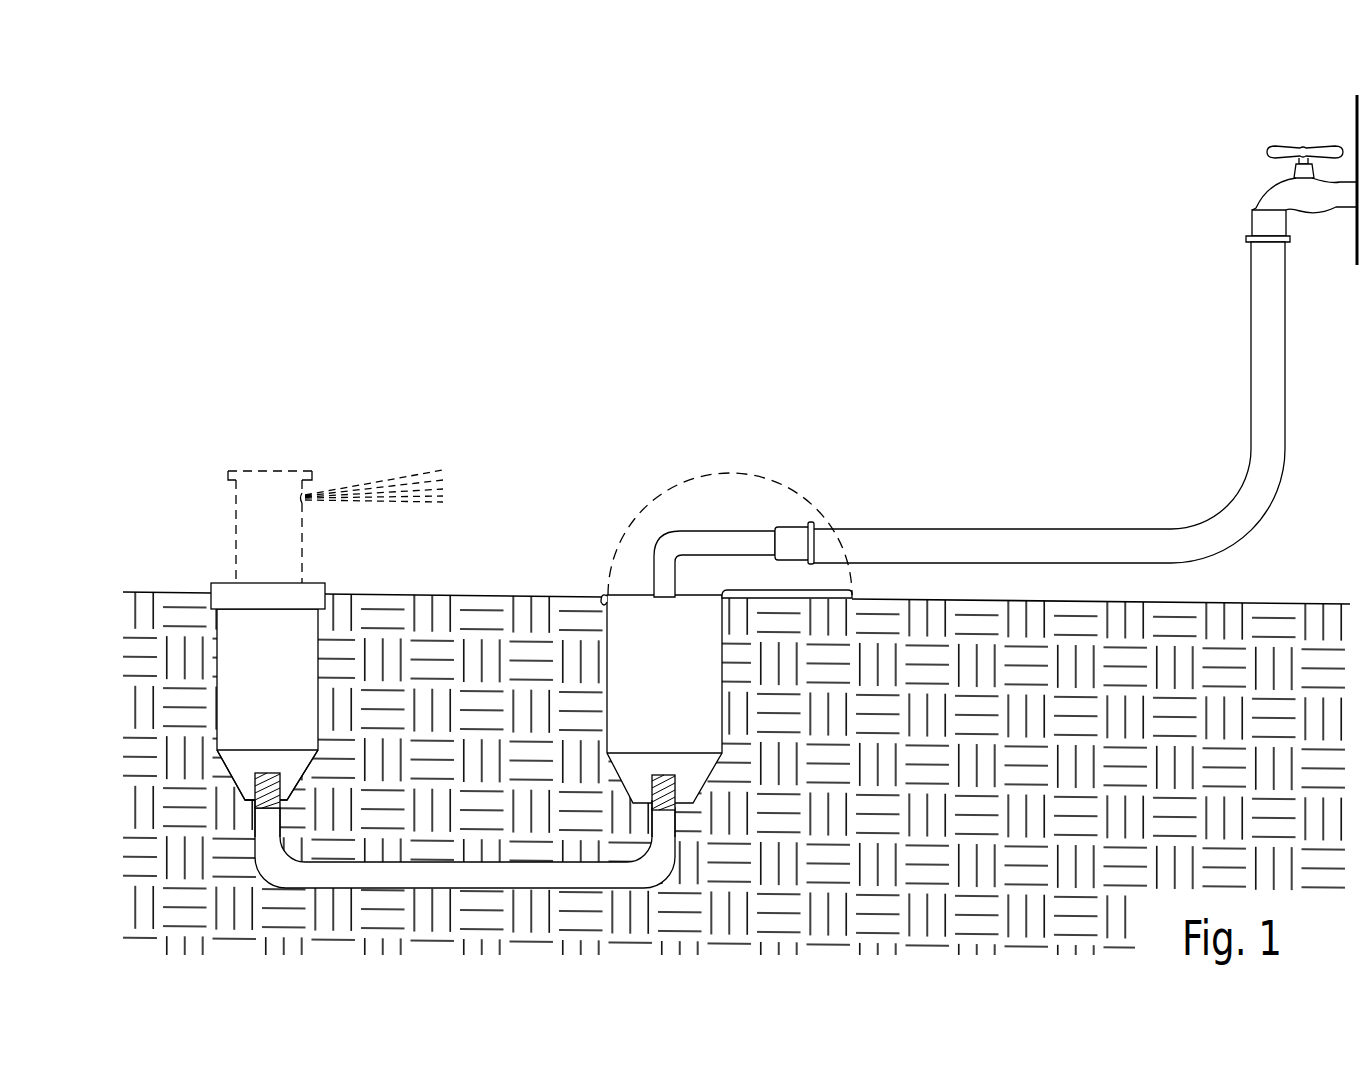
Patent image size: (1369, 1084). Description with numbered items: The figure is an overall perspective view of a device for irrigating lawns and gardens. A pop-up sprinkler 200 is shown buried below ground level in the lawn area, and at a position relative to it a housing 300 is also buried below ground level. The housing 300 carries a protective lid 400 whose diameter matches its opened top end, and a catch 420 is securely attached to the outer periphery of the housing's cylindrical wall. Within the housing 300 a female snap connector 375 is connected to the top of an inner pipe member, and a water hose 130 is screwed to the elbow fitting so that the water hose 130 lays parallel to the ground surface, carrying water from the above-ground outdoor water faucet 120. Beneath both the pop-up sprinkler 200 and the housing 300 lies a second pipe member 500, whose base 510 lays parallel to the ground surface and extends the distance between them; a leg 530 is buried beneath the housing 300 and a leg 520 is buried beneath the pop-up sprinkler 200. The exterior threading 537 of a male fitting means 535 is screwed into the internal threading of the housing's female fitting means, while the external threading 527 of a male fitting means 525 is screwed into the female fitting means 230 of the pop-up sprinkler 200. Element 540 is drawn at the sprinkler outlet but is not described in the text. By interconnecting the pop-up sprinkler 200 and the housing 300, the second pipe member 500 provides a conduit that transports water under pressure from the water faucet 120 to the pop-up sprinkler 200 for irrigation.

The water faucet 120 is at (1266, 150).
The water hose 130 is at (1148, 529).
The pop-up sprinkler 200 is at (288, 635).
The female fitting means 230 is at (282, 773).
The housing 300 is at (670, 668).
The female snap connector 375 is at (707, 530).
The protective lid 400 is at (790, 591).
The catch 420 is at (602, 594).
The second pipe member 500 is at (460, 868).
The base 510 is at (405, 860).
The leg 520 is at (255, 831).
The male fitting means 525 is at (280, 793).
The external threading 527 is at (255, 803).
The leg 530 is at (677, 835).
The male fitting means 535 is at (652, 800).
The exterior threading 537 is at (675, 797).
The outlet of first unit cone 540 is at (253, 795).